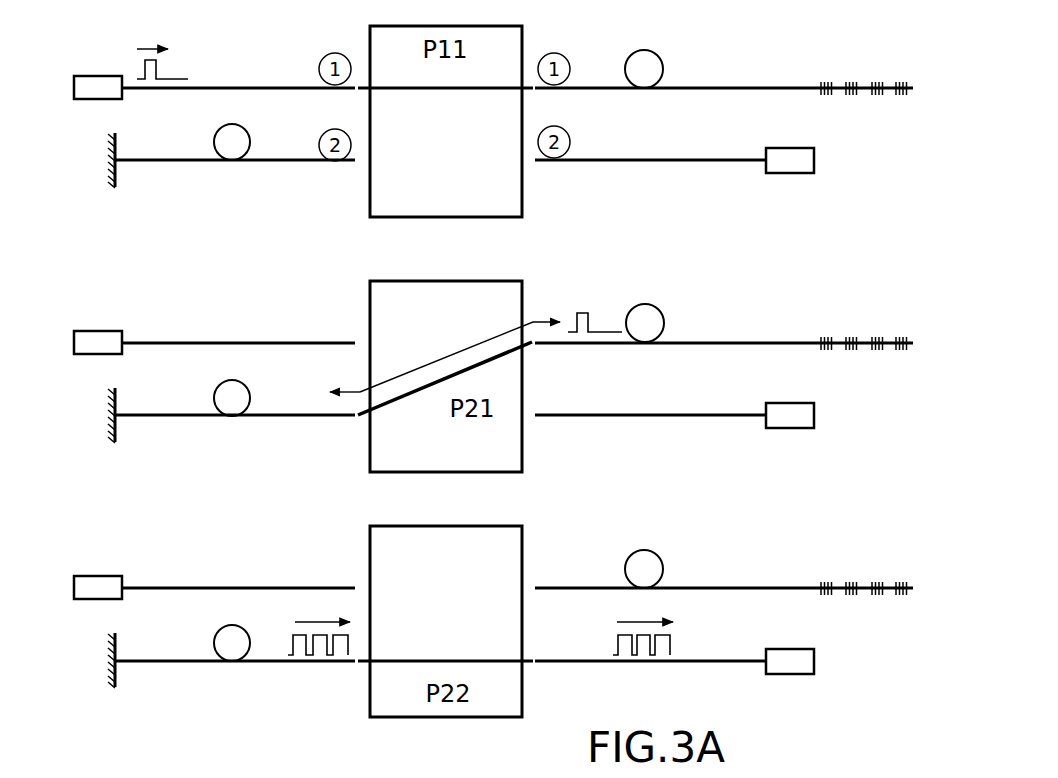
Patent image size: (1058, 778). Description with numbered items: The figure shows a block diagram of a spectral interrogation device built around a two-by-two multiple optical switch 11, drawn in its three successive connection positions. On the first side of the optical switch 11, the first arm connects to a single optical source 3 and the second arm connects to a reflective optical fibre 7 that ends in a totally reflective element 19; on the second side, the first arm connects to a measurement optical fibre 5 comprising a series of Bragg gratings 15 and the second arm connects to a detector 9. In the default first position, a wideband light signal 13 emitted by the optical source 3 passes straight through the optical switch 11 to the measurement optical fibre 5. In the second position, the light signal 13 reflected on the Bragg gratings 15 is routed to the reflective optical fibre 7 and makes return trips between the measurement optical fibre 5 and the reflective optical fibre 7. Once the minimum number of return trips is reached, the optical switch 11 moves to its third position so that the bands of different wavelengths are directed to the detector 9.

The optical source 3 is at (78, 80).
The wideband light signal 13 is at (158, 70).
The multiple optical switch 11 is at (513, 36).
The measurement optical fibre 5 is at (738, 76).
The Bragg gratings 15 is at (852, 98).
The totally reflective element 19 is at (104, 172).
The reflective optical fibre 7 is at (287, 168).
The detector 9 is at (800, 168).